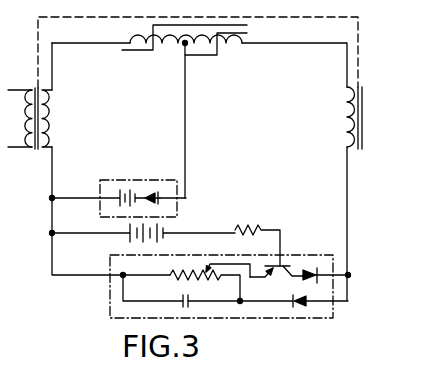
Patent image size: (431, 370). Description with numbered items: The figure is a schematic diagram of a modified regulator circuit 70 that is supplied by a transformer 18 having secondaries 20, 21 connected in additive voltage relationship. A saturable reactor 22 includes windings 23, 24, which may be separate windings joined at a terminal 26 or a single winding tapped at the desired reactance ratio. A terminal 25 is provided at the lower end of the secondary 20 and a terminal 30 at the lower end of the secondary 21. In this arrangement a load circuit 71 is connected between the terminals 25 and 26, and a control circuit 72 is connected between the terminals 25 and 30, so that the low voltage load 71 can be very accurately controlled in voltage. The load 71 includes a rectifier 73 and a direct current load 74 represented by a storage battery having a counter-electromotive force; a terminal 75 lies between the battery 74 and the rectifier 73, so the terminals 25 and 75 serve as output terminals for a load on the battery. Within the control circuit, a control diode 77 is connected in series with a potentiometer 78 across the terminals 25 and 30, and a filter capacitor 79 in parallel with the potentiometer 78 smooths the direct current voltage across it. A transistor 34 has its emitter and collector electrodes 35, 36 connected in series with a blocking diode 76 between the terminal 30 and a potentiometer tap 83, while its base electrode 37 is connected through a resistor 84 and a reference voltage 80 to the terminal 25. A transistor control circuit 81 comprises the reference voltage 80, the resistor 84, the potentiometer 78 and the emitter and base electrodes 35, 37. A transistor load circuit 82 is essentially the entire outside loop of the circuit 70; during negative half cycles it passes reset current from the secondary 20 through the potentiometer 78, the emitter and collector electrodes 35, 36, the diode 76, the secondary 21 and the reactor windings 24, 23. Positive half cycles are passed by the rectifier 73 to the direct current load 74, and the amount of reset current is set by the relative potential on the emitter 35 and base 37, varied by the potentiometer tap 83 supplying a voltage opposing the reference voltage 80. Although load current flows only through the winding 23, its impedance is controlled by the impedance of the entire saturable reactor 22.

The transformer 18 is at (41, 87).
The secondary 20 is at (50, 108).
The secondary 21 is at (343, 108).
The saturable reactor 22 is at (150, 52).
The saturable reactor winding 23 is at (143, 34).
The saturable reactor winding 24 is at (242, 38).
The terminal 25 is at (51, 235).
The terminal 26 is at (185, 45).
The terminal 30 is at (358, 271).
The transistor 34 is at (280, 276).
The emitter electrode 35 is at (272, 275).
The collector electrode 36 is at (285, 266).
The base electrode 37 is at (297, 250).
The regulator circuit 70 is at (251, 118).
The load circuit 71 is at (118, 179).
The control circuit 72 is at (208, 318).
The rectifier 73 is at (178, 206).
The direct current load 74 is at (148, 192).
The terminal 75 is at (152, 194).
The blocking diode 76 is at (320, 267).
The control diode 77 is at (297, 308).
The potentiometer 78 is at (209, 276).
The filter capacitor 79 is at (182, 298).
The reference voltage 80 is at (167, 230).
The transistor control circuit 81 is at (204, 251).
The transistor load circuit 82 is at (168, 295).
The potentiometer tap 83 is at (203, 266).
The resistor 84 is at (247, 228).